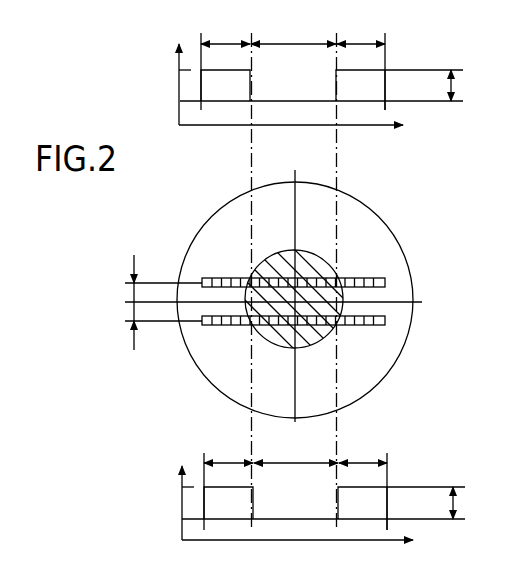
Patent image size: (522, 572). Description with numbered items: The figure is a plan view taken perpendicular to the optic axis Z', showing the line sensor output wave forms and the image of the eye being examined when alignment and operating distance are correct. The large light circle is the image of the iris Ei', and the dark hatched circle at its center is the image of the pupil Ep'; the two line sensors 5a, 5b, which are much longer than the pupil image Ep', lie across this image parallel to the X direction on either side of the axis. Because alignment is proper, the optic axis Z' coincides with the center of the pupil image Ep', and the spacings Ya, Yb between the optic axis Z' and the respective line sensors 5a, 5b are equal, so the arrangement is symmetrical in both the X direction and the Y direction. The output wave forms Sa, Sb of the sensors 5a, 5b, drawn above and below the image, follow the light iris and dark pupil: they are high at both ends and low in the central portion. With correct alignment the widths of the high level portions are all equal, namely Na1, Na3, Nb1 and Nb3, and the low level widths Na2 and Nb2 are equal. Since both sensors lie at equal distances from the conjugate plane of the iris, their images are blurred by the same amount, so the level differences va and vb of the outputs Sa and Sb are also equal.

The output wave form of line sensor 5a Sa is at (385, 83).
The output wave form of line sensor 5b Sb is at (387, 500).
The width of first H level portion of output Sa Na1 is at (225, 34).
The width of L level portion of output Sa Na2 is at (293, 34).
The width of second H level portion of output Sa Na3 is at (361, 34).
The width of first H level portion of output Sb Nb1 is at (228, 453).
The width of L level portion of output Sb Nb2 is at (296, 453).
The width of second H level portion of output Sb Nb3 is at (362, 453).
The difference between H and L level portions of output Sa va is at (464, 85).
The difference between H and L level portions of output Sb vb is at (466, 503).
The spacing between optic axis and line sensor 5a Ya is at (152, 268).
The spacing between optic axis and line sensor 5b Yb is at (153, 316).
The image of the iris Ei' is at (306, 300).
The image of the pupil Ep' is at (294, 299).
The line sensor 5a is at (386, 278).
The line sensor 5b is at (385, 325).
The optic axis Z' is at (350, 352).
The X direction X is at (280, 303).
The Y direction Y is at (292, 287).